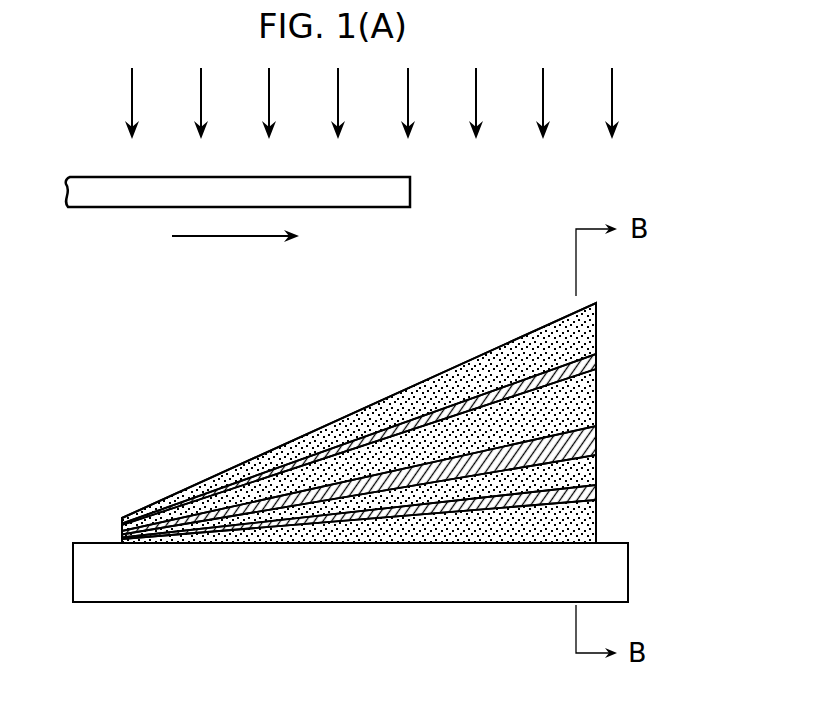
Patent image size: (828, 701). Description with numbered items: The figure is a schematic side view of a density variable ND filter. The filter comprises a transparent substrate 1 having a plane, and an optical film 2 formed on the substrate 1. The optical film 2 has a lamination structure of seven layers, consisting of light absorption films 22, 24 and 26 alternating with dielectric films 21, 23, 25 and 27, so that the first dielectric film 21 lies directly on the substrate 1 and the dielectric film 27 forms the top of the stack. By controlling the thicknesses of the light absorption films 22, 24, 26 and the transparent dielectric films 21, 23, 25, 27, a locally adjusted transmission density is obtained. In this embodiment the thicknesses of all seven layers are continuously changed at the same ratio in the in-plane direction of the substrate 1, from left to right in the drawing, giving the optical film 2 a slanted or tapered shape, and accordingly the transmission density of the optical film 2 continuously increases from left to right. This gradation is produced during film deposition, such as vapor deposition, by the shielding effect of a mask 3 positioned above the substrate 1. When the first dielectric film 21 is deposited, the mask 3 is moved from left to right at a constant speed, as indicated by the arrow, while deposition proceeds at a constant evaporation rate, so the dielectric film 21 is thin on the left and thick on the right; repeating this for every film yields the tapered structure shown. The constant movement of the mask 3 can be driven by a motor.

The transparent substrate 1 is at (629, 572).
The optical film 2 is at (422, 420).
The mask 3 is at (105, 193).
The first dielectric film 21 is at (393, 521).
The light absorption film 22 is at (598, 492).
The dielectric film 23 is at (598, 465).
The light absorption film 24 is at (598, 433).
The dielectric film 25 is at (598, 395).
The light absorption film 26 is at (598, 362).
The dielectric film 27 is at (598, 327).